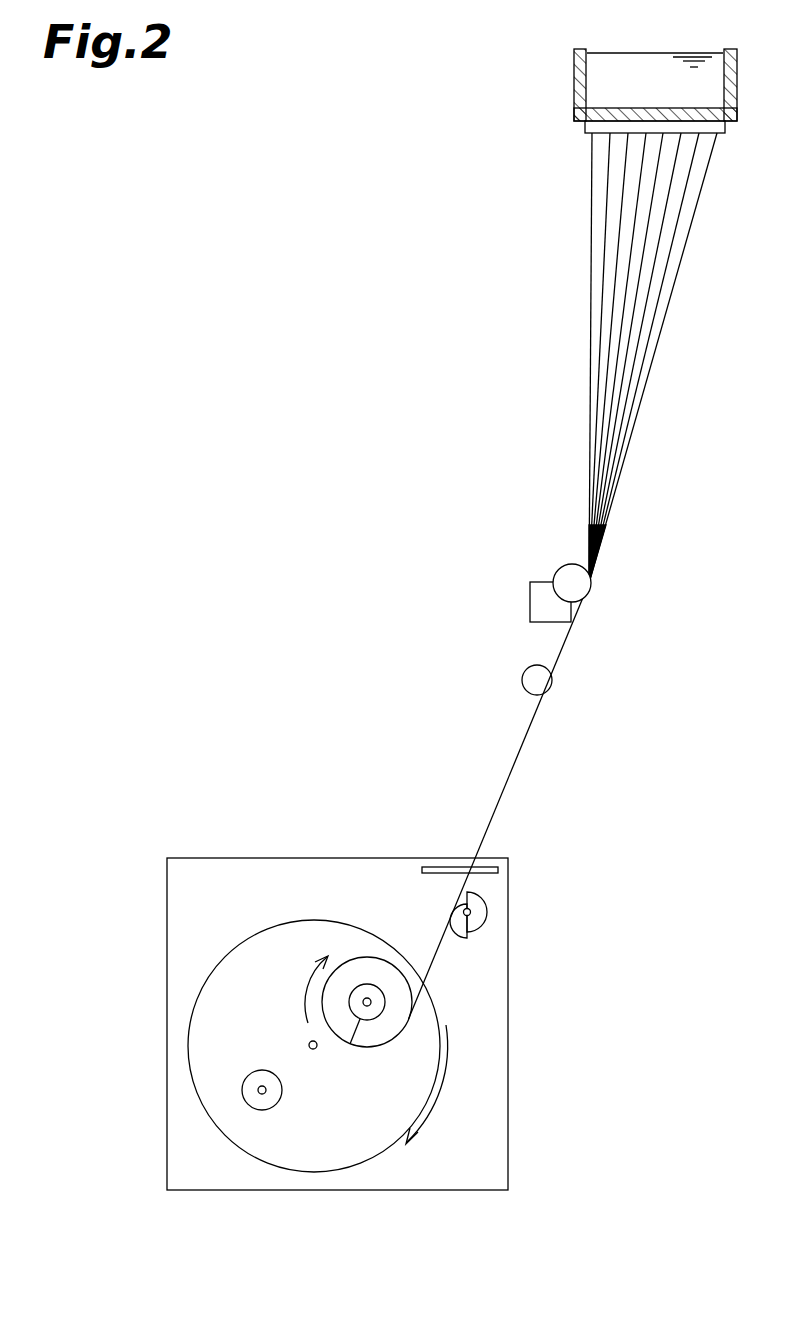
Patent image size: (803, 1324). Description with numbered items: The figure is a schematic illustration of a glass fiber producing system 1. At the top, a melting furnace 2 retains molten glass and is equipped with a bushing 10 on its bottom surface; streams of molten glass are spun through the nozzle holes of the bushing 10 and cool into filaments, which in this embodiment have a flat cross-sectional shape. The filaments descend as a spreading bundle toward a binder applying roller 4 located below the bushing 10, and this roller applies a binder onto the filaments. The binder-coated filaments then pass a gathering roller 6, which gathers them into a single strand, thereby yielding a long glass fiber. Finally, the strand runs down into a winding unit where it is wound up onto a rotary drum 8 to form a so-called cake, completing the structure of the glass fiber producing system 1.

The glass fiber producing system 1 is at (326, 170).
The melting furnace 2 is at (574, 72).
The bushing 10 is at (578, 128).
The binder applying roller 4 is at (563, 565).
The gathering roller 6 is at (522, 673).
The rotary drum 8 is at (383, 990).